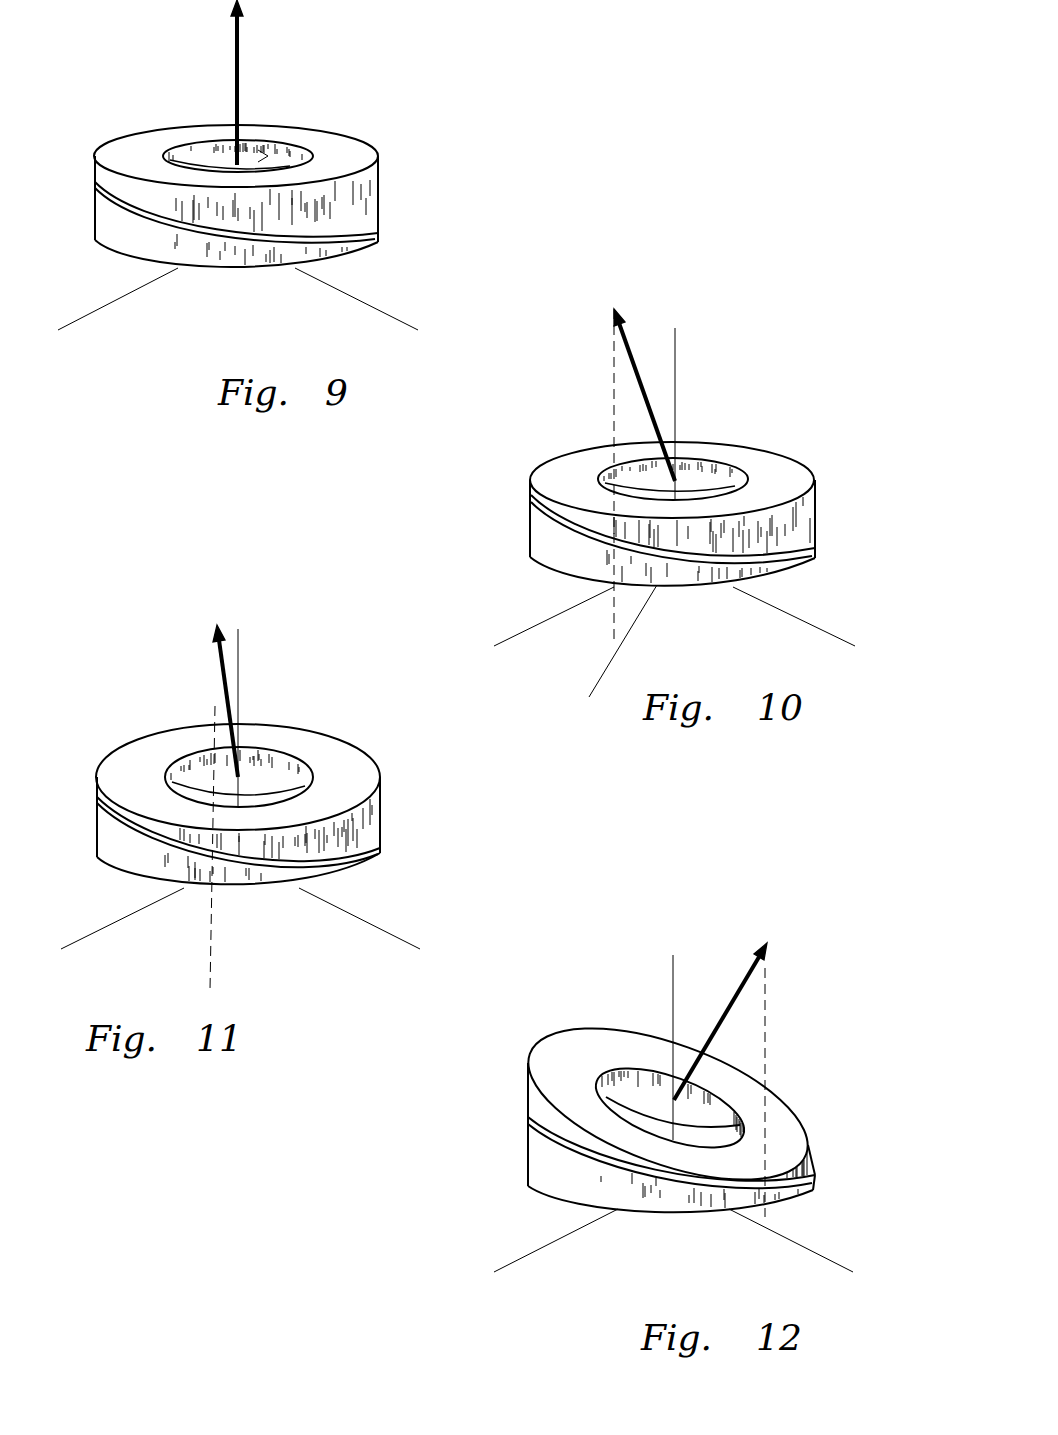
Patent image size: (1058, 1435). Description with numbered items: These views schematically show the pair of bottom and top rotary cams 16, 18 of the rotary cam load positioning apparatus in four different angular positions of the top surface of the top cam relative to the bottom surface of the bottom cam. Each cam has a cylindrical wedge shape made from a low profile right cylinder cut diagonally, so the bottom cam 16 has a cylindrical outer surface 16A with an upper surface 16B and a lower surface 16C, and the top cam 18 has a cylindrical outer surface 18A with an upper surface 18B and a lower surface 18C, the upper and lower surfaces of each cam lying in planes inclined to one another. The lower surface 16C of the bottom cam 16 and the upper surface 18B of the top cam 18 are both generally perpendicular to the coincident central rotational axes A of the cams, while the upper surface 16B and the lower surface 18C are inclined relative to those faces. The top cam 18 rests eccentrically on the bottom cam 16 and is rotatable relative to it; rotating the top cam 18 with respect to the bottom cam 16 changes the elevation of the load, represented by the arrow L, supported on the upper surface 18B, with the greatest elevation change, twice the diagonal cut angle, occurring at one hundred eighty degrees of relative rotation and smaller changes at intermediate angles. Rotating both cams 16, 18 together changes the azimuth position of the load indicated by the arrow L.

In FIG. 9, the bottom rotary cam 16 is at (205, 231).
In FIG. 10, the bottom rotary cam 16 is at (642, 535).
In FIG. 11, the bottom rotary cam 16 is at (207, 837).
In FIG. 12, the bottom rotary cam 16 is at (640, 1154).
In FIG. 9, the cylindrical outer surface of the bottom cam 16A is at (95, 202).
In FIG. 10, the cylindrical outer surface of the bottom cam 16A is at (532, 519).
In FIG. 11, the cylindrical outer surface of the bottom cam 16A is at (96, 821).
In FIG. 12, the cylindrical outer surface of the bottom cam 16A is at (530, 1148).
In FIG. 9, the upper surface of the bottom cam 16B is at (100, 176).
In FIG. 10, the upper surface of the bottom cam 16B is at (555, 510).
In FIG. 11, the upper surface of the bottom cam 16B is at (118, 814).
In FIG. 12, the upper surface of the bottom cam 16B is at (530, 1071).
In FIG. 9, the lower surface of the bottom cam 16C is at (230, 270).
In FIG. 10, the lower surface of the bottom cam 16C is at (695, 589).
In FIG. 11, the lower surface of the bottom cam 16C is at (262, 889).
In FIG. 12, the lower surface of the bottom cam 16C is at (697, 1213).
In FIG. 9, the top rotary cam 18 is at (283, 181).
In FIG. 10, the top rotary cam 18 is at (714, 489).
In FIG. 11, the top rotary cam 18 is at (279, 790).
In FIG. 12, the top rotary cam 18 is at (638, 1101).
In FIG. 9, the cylindrical outer surface of the top cam 18A is at (382, 218).
In FIG. 10, the cylindrical outer surface of the top cam 18A is at (816, 539).
In FIG. 11, the cylindrical outer surface of the top cam 18A is at (380, 823).
In FIG. 12, the cylindrical outer surface of the top cam 18A is at (522, 1093).
In FIG. 9, the upper surface of the top cam 18B is at (343, 150).
In FIG. 10, the upper surface of the top cam 18B is at (783, 474).
In FIG. 11, the upper surface of the top cam 18B is at (310, 746).
In FIG. 12, the upper surface of the top cam 18B is at (570, 1043).
In FIG. 9, the lower surface of the top cam 18C is at (352, 253).
In FIG. 10, the lower surface of the top cam 18C is at (790, 578).
In FIG. 11, the lower surface of the top cam 18C is at (353, 875).
In FIG. 12, the lower surface of the top cam 18C is at (790, 1194).
In FIG. 9, the arrow representing the load position L is at (240, 62).
In FIG. 10, the arrow representing the load position L is at (629, 352).
In FIG. 11, the arrow representing the load position L is at (226, 664).
In FIG. 12, the arrow representing the load position L is at (742, 978).
In FIG. 9, the central rotational axes A is at (268, 156).
In FIG. 10, the central rotational axes A is at (675, 407).
In FIG. 11, the central rotational axes A is at (242, 674).
In FIG. 12, the central rotational axes A is at (673, 980).